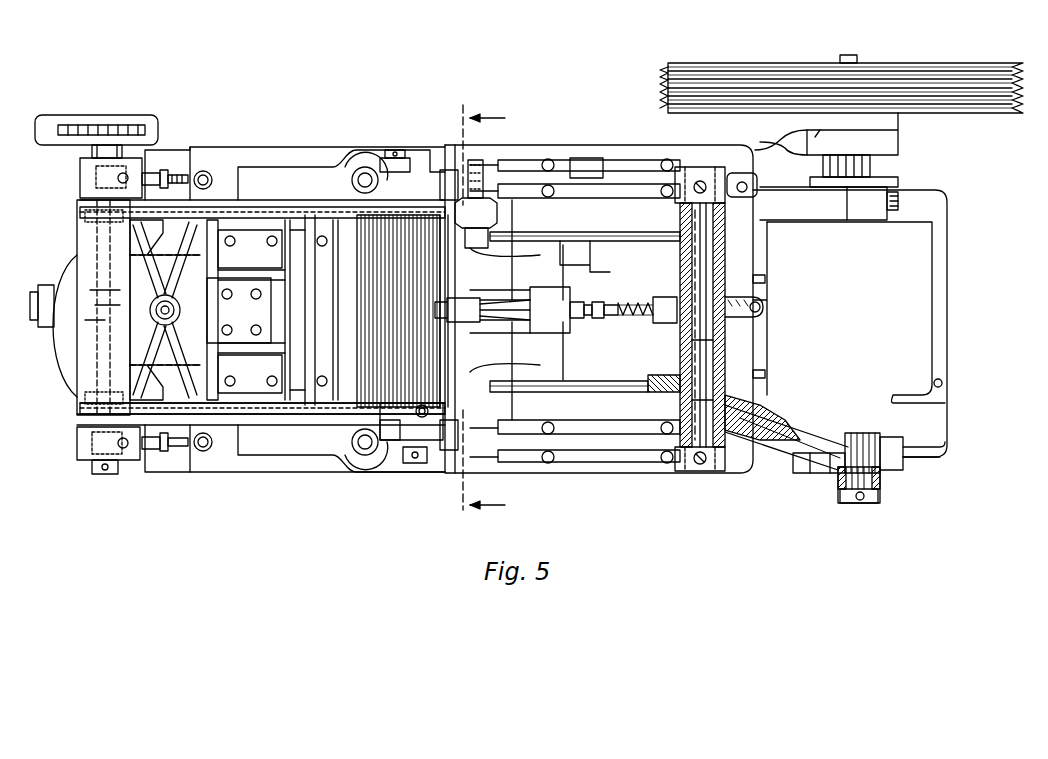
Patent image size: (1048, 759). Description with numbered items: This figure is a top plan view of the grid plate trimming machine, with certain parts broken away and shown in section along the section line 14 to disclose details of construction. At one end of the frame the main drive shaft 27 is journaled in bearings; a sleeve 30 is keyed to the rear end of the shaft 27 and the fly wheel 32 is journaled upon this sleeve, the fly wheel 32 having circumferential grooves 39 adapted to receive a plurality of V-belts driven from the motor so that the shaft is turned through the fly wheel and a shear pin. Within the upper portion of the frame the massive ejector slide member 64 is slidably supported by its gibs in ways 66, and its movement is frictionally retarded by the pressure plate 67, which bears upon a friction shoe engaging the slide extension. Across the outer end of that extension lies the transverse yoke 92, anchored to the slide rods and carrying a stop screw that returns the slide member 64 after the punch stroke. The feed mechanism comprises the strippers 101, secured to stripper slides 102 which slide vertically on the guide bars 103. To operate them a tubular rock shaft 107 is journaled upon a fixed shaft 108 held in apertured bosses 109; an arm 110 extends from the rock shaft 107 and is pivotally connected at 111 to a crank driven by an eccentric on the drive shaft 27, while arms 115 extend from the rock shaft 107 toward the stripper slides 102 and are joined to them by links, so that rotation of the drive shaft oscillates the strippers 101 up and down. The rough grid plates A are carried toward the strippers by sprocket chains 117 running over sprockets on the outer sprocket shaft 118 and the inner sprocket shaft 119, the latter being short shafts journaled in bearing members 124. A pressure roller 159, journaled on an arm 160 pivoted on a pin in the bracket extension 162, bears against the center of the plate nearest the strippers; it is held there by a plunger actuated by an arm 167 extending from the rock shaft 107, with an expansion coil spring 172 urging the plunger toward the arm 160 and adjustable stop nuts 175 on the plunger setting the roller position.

The section line 14- 14 is at (484, 310).
The main drive shaft 27 is at (870, 165).
The sleeve 30 is at (895, 135).
The fly wheel 32 is at (760, 70).
The circumferential grooves 39 is at (660, 72).
The ejector slide member 64 is at (311, 310).
The ways 66 is at (246, 310).
The pressure plate 67 is at (165, 310).
The transverse yoke 92 is at (75, 395).
The strippers 101 is at (450, 180).
The stripper slides 102 is at (515, 470).
The guide bars 103 is at (482, 185).
The tubular rock shaft 107 is at (760, 280).
The fixed shaft 108 is at (750, 357).
The apertured bosses 109 is at (718, 165).
The arm 110 is at (780, 420).
The pivotal connection 111 is at (838, 483).
The arms 115 is at (640, 232).
The sprocket chains 117 is at (260, 208).
The outer sprocket shaft 118 is at (105, 475).
The inner sprocket shaft 119 is at (410, 463).
The bearing members 124 is at (395, 165).
The pressure roller 159 is at (445, 300).
The arm 160 is at (525, 320).
The bracket extension 162 is at (512, 278).
The arm 167 is at (765, 322).
The expansion coil spring 172 is at (632, 318).
The adjustable stop nuts 175 is at (578, 322).
The grid panel or plate A is at (352, 400).